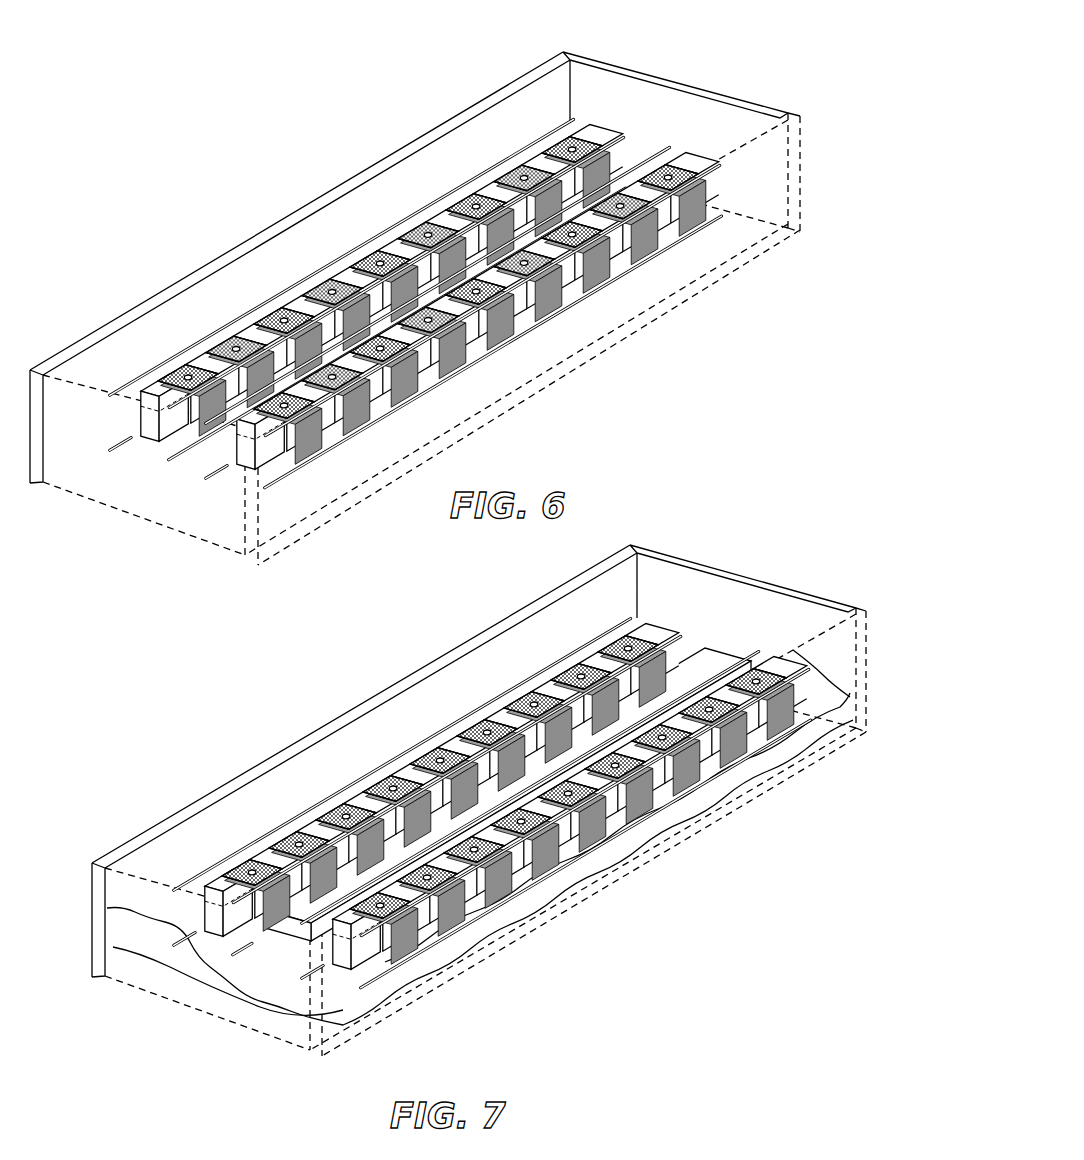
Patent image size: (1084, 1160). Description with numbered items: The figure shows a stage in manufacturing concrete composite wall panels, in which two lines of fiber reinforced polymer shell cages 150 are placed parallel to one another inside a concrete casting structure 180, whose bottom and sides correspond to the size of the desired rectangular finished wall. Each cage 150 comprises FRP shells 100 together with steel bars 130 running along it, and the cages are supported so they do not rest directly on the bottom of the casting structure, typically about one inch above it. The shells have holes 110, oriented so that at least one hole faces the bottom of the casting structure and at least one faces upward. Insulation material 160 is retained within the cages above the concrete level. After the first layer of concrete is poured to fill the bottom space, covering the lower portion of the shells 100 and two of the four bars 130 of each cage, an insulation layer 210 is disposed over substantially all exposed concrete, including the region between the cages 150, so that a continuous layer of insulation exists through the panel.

In FIG. 6, the FRP shell 100 is at (414, 305).
In FIG. 7, the FRP shell 100 is at (514, 808).
In FIG. 6, the hole 110 is at (603, 121).
In FIG. 6, the steel bar 130 is at (493, 370).
In FIG. 7, the steel bar 130 is at (586, 852).
In FIG. 6, the shell cage 150 is at (366, 271).
In FIG. 7, the shell cage 150 is at (427, 742).
In FIG. 6, the insulation material 160 is at (152, 437).
In FIG. 7, the insulation material 160 is at (216, 933).
In FIG. 6, the concrete casting structure 180 is at (680, 82).
In FIG. 7, the concrete casting structure 180 is at (720, 568).
In FIG. 7, the insulation layer 210 is at (333, 892).